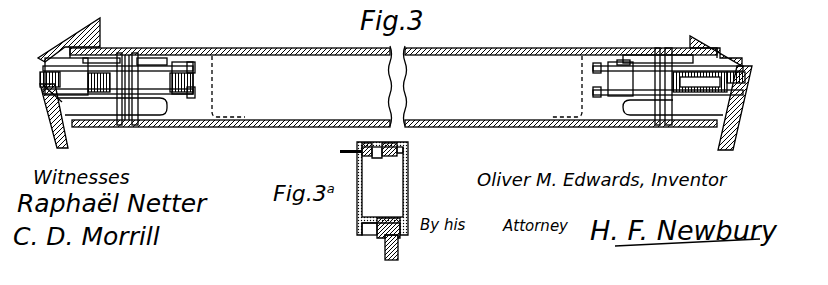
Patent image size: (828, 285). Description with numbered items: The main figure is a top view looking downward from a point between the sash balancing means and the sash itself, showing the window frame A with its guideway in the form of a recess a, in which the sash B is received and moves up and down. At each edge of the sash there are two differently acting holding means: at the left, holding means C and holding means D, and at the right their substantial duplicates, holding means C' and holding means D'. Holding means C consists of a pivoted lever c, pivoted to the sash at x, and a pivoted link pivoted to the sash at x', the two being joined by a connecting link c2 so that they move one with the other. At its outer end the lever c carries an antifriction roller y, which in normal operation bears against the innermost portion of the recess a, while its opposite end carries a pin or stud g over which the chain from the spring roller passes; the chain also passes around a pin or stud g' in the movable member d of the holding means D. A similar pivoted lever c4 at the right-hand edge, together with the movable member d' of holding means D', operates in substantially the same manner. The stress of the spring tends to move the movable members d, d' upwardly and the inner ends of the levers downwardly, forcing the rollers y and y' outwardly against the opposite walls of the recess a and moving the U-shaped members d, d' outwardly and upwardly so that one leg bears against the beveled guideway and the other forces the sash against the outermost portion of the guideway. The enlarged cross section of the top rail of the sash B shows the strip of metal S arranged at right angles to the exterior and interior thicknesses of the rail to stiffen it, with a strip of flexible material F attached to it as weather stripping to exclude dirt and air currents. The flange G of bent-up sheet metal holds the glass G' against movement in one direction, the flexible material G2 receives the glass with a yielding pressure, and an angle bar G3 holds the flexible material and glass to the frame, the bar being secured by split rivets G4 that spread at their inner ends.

In FIG. 3, the window frame A is at (394, 84).
In FIG. 3, the holding means C is at (48, 61).
In FIG. 3, the holding means C' is at (774, 52).
In FIG. 3, the holding means D is at (112, 121).
In FIG. 3, the holding means D' is at (673, 124).
In FIG. 3, the recess a is at (50, 87).
In FIG. 3, the pivoted lever c is at (148, 93).
In FIG. 3, the connecting link c2 is at (78, 87).
In FIG. 3, the pivoted lever c4 is at (643, 72).
In FIG. 3, the movable member d is at (107, 87).
In FIG. 3, the movable member d' is at (620, 46).
In FIG. 3, the pin or stud g is at (182, 60).
In FIG. 3, the pin or stud g' is at (668, 106).
In FIG. 3, the pivot x is at (107, 46).
In FIG. 3, the pivot x' is at (663, 99).
In FIG. 3, the antifriction roller y is at (100, 81).
In FIG. 3, the antifriction roller y' is at (722, 82).
In FIG. 3A, the sash B is at (389, 188).
In FIG. 3A, the strip of flexible material F is at (333, 154).
In FIG. 3A, the strip of metal S is at (393, 157).
In FIG. 3A, the flange G is at (414, 244).
In FIG. 3A, the glass G' is at (376, 247).
In FIG. 3A, the flexible material G2 is at (392, 224).
In FIG. 3A, the angle bar G3 is at (368, 235).
In FIG. 3A, the split rivets G4 is at (376, 169).